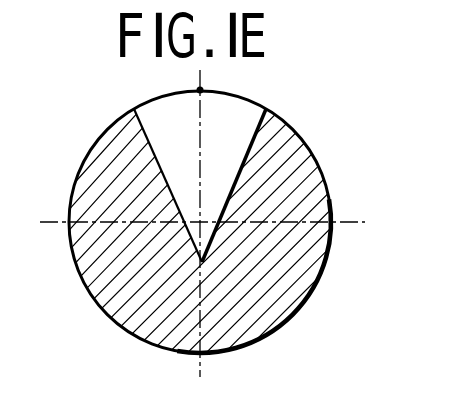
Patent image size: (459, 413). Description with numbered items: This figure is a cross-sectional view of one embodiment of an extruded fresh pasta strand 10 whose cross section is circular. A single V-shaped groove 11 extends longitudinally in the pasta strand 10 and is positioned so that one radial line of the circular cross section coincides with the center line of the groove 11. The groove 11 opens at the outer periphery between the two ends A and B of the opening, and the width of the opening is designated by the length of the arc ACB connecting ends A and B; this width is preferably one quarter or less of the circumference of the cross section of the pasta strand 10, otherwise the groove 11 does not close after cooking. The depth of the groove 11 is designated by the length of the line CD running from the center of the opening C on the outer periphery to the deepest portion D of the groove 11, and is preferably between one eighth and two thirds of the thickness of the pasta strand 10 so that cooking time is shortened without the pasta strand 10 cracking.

The pasta strand 10 is at (78, 172).
The groove 11 is at (222, 145).
The end of the opening A is at (129, 96).
The end of the opening B is at (277, 96).
The center of the opening C is at (209, 78).
The deepest portion of the groove D is at (218, 268).